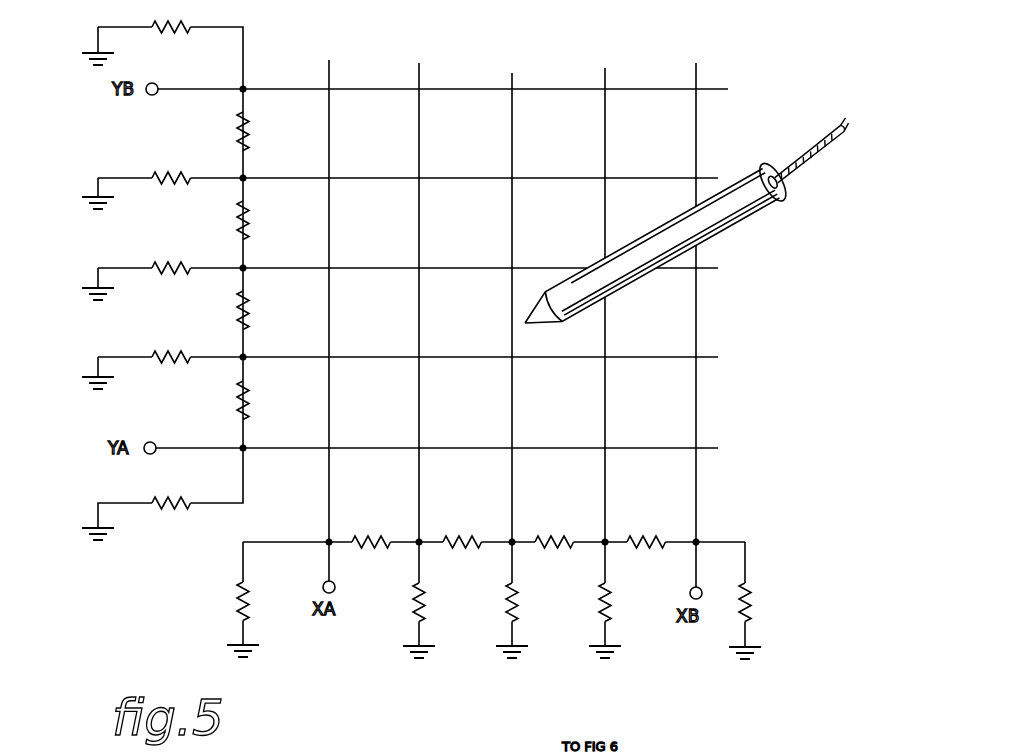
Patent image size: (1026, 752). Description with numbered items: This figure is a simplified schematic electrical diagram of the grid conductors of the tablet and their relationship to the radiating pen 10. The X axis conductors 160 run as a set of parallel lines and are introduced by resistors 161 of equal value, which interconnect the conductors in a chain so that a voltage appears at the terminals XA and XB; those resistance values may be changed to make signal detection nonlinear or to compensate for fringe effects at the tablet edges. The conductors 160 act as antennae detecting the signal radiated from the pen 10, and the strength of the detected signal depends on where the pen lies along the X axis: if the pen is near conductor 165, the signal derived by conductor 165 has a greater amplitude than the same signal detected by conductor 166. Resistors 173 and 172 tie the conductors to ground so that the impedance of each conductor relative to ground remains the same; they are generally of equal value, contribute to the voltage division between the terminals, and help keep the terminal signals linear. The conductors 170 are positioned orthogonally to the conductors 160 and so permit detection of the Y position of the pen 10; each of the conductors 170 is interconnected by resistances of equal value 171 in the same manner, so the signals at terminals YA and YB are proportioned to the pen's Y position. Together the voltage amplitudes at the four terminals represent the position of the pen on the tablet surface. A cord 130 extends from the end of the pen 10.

The pen 10 is at (754, 230).
The cord 130 is at (828, 153).
The X axis conductors 160 is at (697, 425).
The resistors 161 is at (456, 539).
The conductor 165 is at (606, 413).
The conductor 166 is at (331, 407).
The conductors 170 is at (363, 88).
The resistances of equal value 171 is at (237, 133).
The resistors 172 is at (412, 605).
The resistors 173 is at (190, 178).